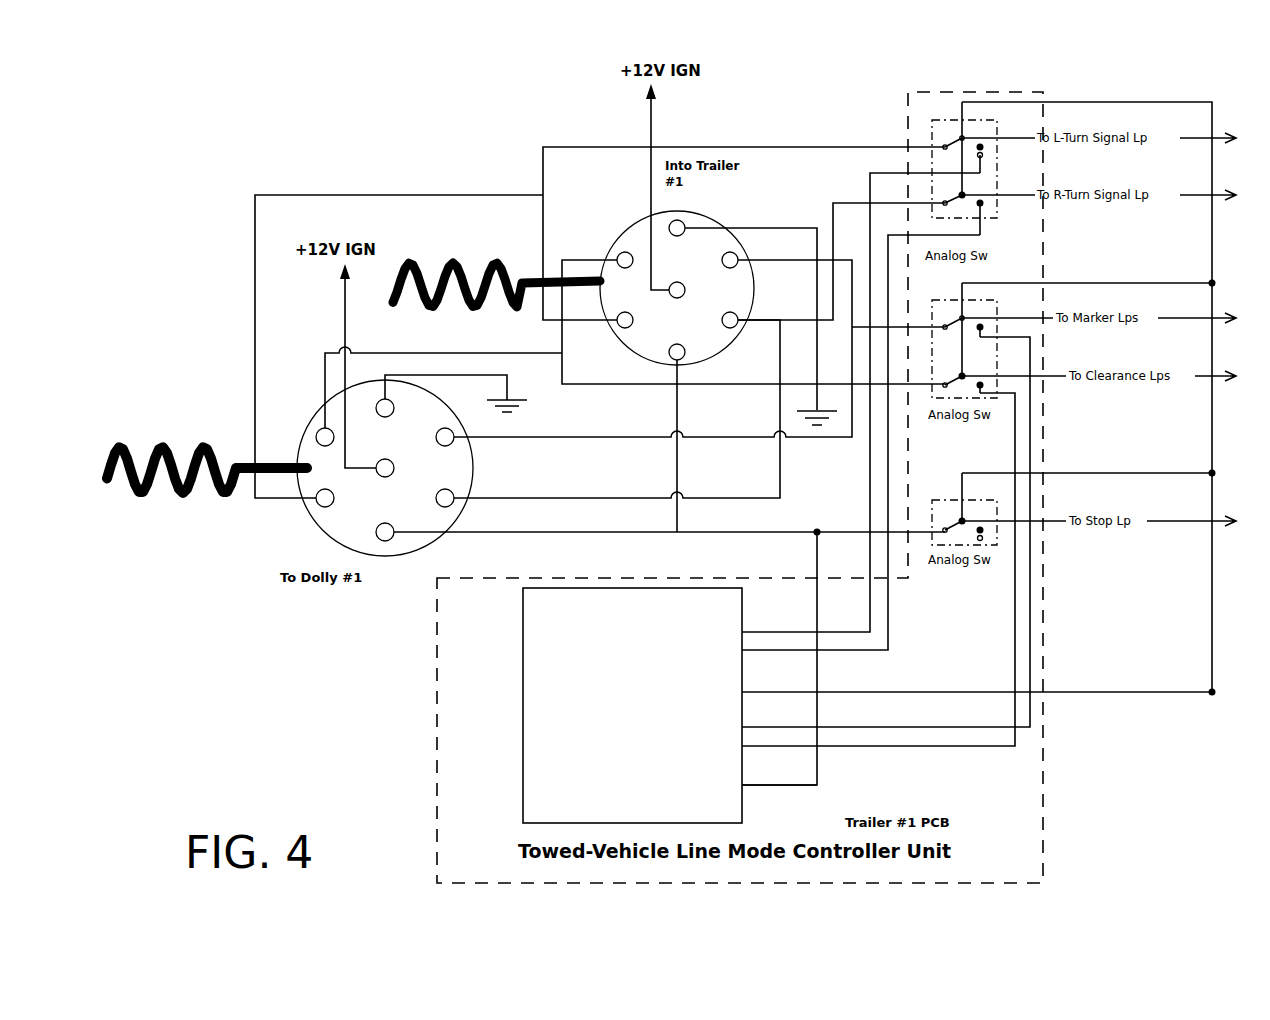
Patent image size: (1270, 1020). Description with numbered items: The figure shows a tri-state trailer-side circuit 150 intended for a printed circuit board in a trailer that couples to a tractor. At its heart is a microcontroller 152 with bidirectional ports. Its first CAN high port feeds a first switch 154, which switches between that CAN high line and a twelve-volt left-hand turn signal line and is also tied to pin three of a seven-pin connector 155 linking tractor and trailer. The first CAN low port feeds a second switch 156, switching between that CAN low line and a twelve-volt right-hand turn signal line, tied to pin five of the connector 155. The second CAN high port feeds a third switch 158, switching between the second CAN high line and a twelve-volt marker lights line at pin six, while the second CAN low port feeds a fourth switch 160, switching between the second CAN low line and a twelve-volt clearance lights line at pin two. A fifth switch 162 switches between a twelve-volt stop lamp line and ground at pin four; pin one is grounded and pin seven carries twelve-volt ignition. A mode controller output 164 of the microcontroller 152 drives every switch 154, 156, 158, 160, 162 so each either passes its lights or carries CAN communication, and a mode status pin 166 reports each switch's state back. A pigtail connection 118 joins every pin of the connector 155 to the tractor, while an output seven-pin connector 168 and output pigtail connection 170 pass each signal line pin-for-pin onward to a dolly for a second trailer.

The pigtail connection 118 is at (466, 250).
The tri-state trailer-side circuit 150 is at (436, 762).
The microcontroller 152 is at (521, 622).
The first switch 154 is at (950, 133).
The 7-pin connector 155 is at (624, 222).
The second switch 156 is at (977, 207).
The third switch 158 is at (955, 318).
The fourth switch 160 is at (977, 388).
The fifth switch 162 is at (957, 522).
The mode controller output 164 is at (745, 677).
The mode status pin 166 is at (745, 786).
The output 7-pin connector 168 is at (315, 418).
The output pigtail connection 170 is at (158, 442).